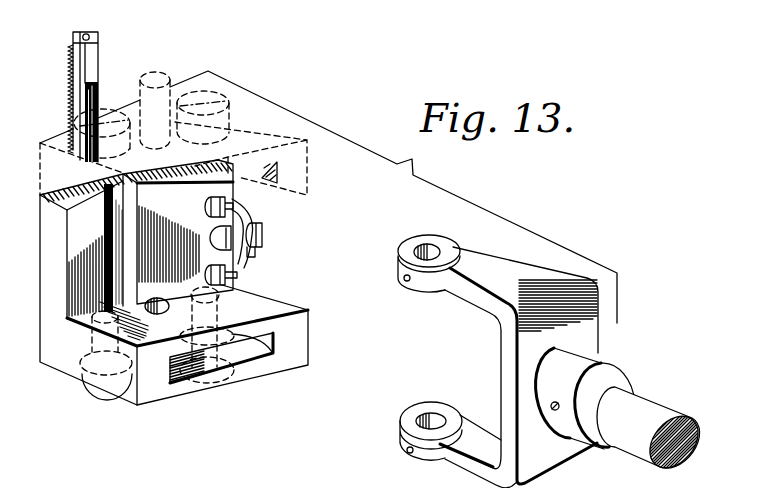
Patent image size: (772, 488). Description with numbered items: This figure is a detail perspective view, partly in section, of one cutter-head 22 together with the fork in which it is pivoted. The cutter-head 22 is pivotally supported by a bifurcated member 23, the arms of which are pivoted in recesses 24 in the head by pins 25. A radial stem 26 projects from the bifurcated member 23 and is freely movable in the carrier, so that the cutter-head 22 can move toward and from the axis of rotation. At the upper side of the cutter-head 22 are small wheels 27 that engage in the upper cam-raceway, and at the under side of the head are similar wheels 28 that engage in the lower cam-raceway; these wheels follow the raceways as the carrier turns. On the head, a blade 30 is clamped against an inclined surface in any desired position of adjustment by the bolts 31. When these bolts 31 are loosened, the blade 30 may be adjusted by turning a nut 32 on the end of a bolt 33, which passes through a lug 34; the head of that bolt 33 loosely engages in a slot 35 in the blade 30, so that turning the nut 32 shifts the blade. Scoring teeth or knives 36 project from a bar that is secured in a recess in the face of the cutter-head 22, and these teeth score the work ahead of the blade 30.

The cutter-head 22 is at (63, 365).
The bifurcated member 23 is at (594, 347).
The recesses 24 is at (290, 135).
The pins 25 is at (157, 84).
The radial stem 26 is at (647, 448).
The small wheels 27 is at (107, 117).
The similar wheels 28 is at (108, 397).
The blade 30 is at (128, 232).
The bolts 31 is at (207, 203).
The nut 32 is at (263, 233).
The bolt 33 is at (246, 224).
The lug 34 is at (251, 257).
The slot 35 is at (220, 247).
The scoring teeth or knives 36 is at (67, 68).